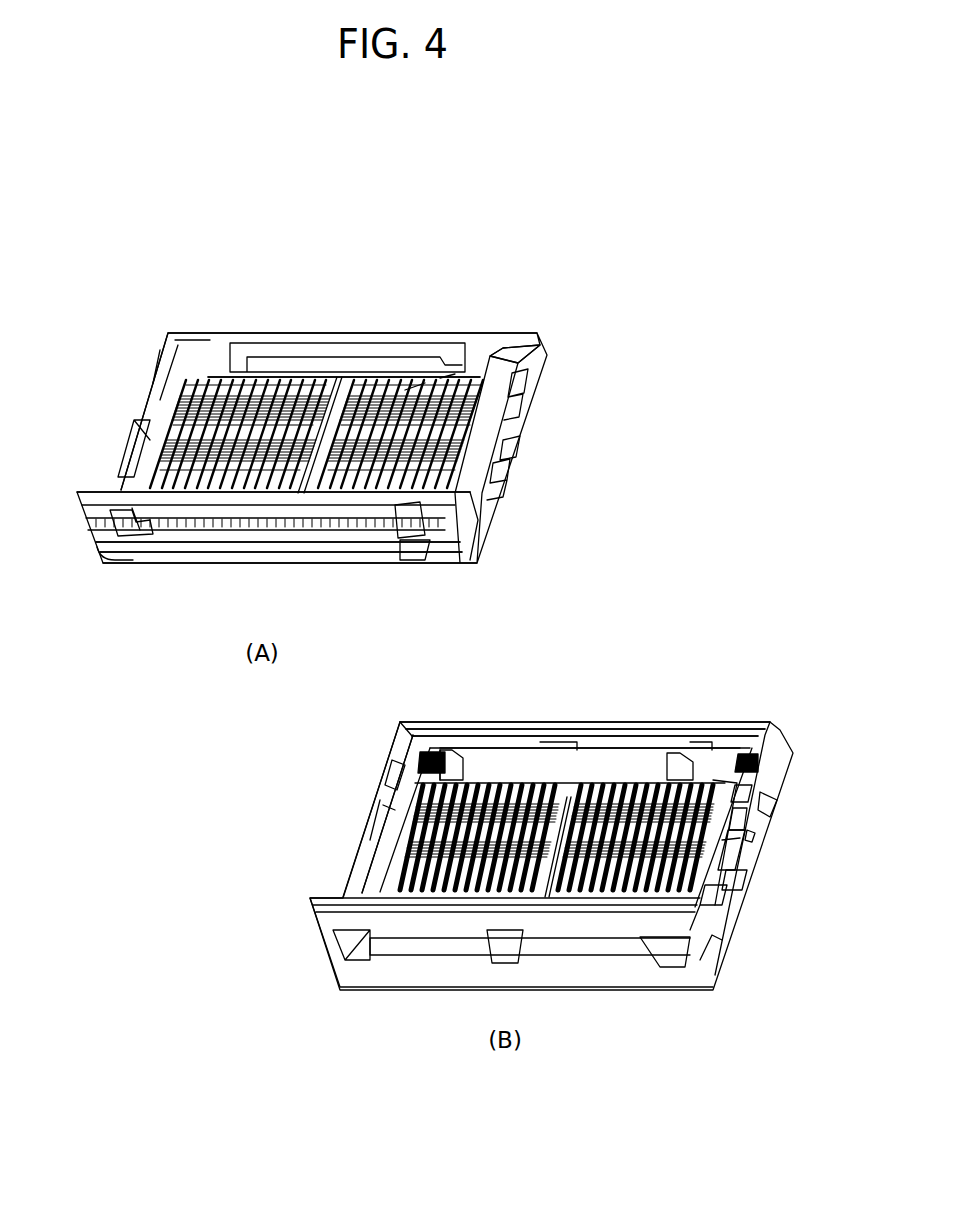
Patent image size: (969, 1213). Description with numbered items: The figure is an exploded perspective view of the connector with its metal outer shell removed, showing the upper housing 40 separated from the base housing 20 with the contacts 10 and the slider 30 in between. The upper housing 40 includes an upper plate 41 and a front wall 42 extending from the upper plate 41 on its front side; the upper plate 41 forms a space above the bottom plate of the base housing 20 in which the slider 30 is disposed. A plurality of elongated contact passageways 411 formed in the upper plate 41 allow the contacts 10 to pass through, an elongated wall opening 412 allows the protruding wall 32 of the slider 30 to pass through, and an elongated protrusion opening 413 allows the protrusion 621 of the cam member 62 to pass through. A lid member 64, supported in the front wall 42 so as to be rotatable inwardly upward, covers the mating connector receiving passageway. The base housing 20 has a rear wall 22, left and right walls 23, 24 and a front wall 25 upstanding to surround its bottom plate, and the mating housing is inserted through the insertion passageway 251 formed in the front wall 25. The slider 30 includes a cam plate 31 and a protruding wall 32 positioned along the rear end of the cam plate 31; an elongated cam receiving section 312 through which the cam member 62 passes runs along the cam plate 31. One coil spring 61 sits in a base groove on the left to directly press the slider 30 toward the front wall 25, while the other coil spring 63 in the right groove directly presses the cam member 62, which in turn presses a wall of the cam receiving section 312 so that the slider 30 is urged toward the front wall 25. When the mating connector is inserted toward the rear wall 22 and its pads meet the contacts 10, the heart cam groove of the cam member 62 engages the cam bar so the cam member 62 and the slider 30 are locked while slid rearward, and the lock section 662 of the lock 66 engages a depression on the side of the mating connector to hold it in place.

The upper housing 40 is at (528, 276).
The upper plate 41 is at (214, 350).
The elongated wall opening 412 is at (317, 350).
The elongated contact passageways 411 is at (441, 380).
The elongated protrusion opening 413 is at (540, 343).
The front wall 42 is at (98, 512).
The lid member 64 is at (233, 543).
The base housing 20 is at (798, 749).
The rear wall 22 is at (718, 738).
The left wall 23 is at (400, 783).
The right wall 24 is at (773, 797).
The front wall 25 is at (332, 920).
The insertion passageway 251 is at (342, 983).
The slider 30 is at (478, 645).
The cam plate 31 is at (442, 777).
The protruding wall 32 is at (623, 773).
The elongated cam receiving section 312 is at (740, 787).
The contacts 10 is at (661, 793).
The coil spring 61 is at (423, 763).
The cam member 62 is at (727, 850).
The protrusion 621 is at (737, 822).
The coil spring 63 is at (750, 793).
The lock 66 is at (732, 877).
The lock section 662 is at (727, 893).